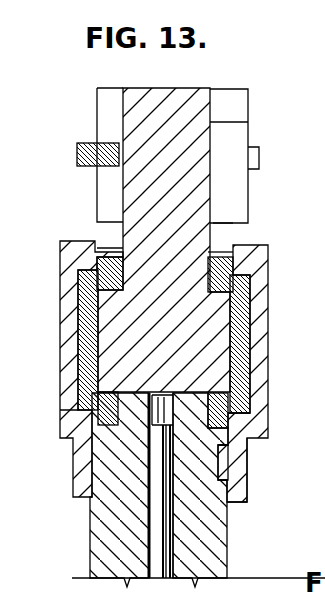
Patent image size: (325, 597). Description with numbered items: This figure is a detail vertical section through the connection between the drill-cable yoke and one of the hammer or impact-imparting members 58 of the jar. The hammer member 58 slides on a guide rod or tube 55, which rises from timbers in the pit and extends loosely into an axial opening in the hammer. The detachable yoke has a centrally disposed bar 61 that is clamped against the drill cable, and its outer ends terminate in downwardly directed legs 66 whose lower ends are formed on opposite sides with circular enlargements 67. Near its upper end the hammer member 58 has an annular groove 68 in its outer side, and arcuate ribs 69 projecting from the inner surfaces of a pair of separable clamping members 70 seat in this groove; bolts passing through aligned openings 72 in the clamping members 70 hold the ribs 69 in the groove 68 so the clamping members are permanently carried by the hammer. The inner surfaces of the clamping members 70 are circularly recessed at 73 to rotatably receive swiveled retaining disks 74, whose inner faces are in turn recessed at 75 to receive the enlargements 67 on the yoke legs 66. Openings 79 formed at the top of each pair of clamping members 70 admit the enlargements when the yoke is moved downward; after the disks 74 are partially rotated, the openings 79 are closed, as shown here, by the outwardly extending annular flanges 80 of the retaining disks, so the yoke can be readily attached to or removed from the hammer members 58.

The guide rods or tubes 55 is at (153, 527).
The hammer or impact-imparting members 58 is at (210, 523).
The bar 61 is at (187, 147).
The legs 66 is at (140, 208).
The circular enlargements 67 is at (102, 344).
The annular grooves 68 is at (210, 481).
The arcuate ribs 69 is at (218, 458).
The clamping members 70 is at (257, 410).
The aligned openings 72 is at (317, 196).
The circular recesses 73 is at (252, 315).
The swiveled retaining disks 74 is at (240, 298).
The circular recesses 75 is at (220, 373).
The openings 79 is at (221, 251).
The annular flanges 80 is at (230, 263).